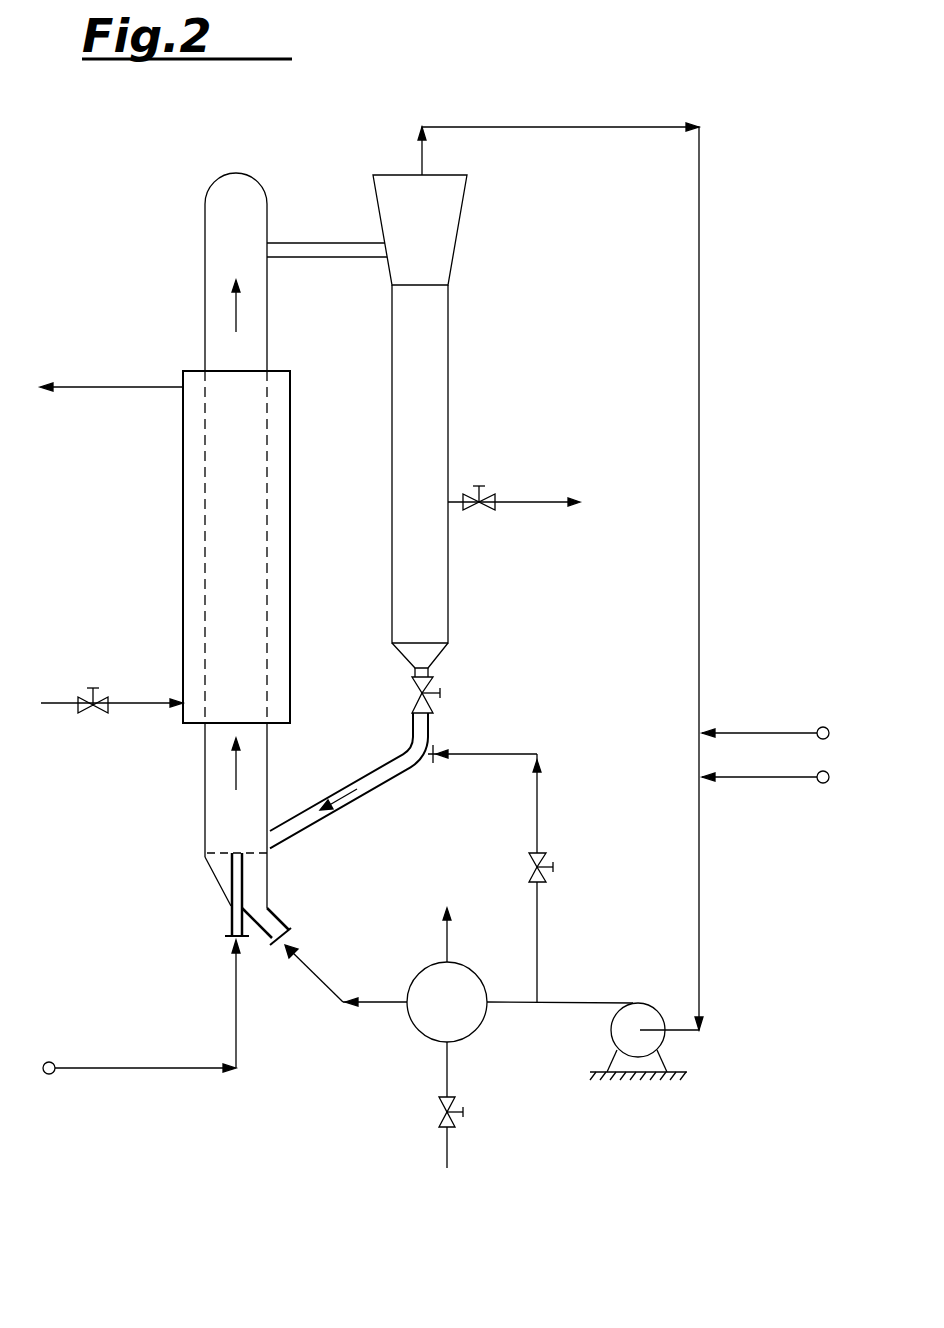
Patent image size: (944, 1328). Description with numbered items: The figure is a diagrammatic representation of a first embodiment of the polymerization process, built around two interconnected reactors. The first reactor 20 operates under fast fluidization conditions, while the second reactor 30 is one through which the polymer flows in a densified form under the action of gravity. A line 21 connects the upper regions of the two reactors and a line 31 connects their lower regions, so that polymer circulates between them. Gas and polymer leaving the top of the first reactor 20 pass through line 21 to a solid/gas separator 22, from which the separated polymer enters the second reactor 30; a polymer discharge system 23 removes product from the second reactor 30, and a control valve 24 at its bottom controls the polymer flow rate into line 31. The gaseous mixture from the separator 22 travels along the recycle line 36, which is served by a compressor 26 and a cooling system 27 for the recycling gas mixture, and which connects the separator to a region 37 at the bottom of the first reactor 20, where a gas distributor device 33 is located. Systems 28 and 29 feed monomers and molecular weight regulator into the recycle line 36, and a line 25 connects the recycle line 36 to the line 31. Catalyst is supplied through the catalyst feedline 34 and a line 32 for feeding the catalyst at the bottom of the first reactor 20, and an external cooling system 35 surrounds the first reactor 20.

The first reactor 20 is at (205, 293).
The line connecting upper regions of the reactors 21 is at (318, 243).
The solid/gas separator 22 is at (462, 223).
The polymer discharge system 23 is at (532, 502).
The control valve 24 is at (440, 690).
The line connecting recycle line to line 31 25 is at (543, 862).
The compressor 26 is at (647, 1007).
The cooling system 27 is at (413, 1025).
The monomer feed system 28 is at (823, 727).
The molecular weight regulator feed system 29 is at (823, 783).
The second reactor 30 is at (448, 390).
The line connecting lower regions of the reactors 31 is at (348, 783).
The catalyst feed line 32 is at (227, 920).
The gas distributor device 33 is at (220, 860).
The catalyst feedline 34 is at (52, 1075).
The external cooling system 35 is at (183, 502).
The recycle line 36 is at (702, 403).
The bottom region of the first reactor 37 is at (267, 868).